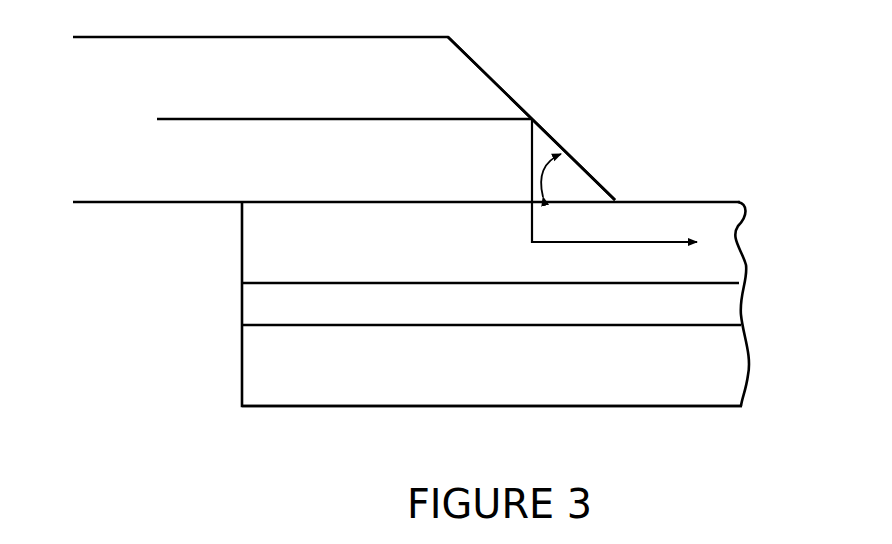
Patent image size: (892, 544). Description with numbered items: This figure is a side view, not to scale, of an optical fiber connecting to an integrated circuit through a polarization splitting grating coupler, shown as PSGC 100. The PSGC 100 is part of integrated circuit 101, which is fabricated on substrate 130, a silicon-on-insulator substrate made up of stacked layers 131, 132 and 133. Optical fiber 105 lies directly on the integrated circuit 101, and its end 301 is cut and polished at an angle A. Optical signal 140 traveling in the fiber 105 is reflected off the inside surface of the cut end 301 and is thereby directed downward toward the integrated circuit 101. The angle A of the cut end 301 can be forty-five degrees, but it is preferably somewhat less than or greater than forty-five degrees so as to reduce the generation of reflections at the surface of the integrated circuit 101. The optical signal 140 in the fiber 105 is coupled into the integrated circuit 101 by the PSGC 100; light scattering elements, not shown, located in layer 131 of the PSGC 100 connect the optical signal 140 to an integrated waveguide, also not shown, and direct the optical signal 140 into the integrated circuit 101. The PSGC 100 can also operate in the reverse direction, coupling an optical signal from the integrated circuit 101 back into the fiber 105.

The polarization splitting grating coupler (PSGC) 100 is at (500, 222).
The integrated circuit 101 is at (718, 185).
The optical fiber 105 is at (163, 177).
The substrate 130 is at (222, 305).
The layer 131 is at (336, 261).
The layer 132 is at (336, 315).
The layer 133 is at (336, 375).
The optical signal 140 is at (223, 119).
The cut end 301 is at (497, 82).
The angle A is at (540, 167).